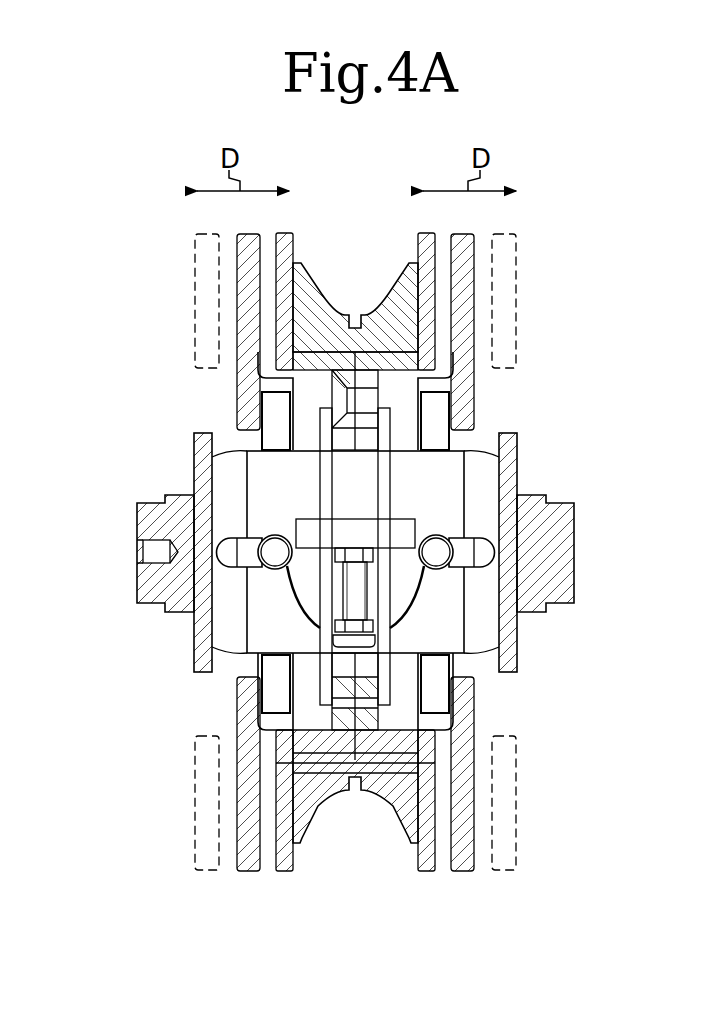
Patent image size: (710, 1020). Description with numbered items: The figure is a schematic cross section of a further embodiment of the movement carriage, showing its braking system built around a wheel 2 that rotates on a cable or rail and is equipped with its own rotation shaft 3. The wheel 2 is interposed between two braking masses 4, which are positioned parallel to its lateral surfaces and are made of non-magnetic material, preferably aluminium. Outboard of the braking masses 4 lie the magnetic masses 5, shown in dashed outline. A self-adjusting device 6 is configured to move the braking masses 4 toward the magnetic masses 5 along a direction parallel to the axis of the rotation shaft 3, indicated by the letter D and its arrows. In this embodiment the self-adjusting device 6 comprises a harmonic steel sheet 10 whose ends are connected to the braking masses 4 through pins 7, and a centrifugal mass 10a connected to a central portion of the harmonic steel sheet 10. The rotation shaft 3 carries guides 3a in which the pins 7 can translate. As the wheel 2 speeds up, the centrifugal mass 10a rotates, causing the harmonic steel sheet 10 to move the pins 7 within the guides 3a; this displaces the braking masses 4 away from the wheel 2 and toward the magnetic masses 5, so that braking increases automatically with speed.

The wheel 2 is at (395, 298).
The rotation shaft 3 is at (158, 583).
The guides 3a is at (227, 552).
The braking masses 4 is at (248, 268).
The magnetic masses 5 is at (208, 307).
The self-adjusting device 6 is at (283, 490).
The pins 7 is at (275, 552).
The harmonic steel sheet 10 is at (423, 597).
The centrifugal mass 10a is at (363, 513).